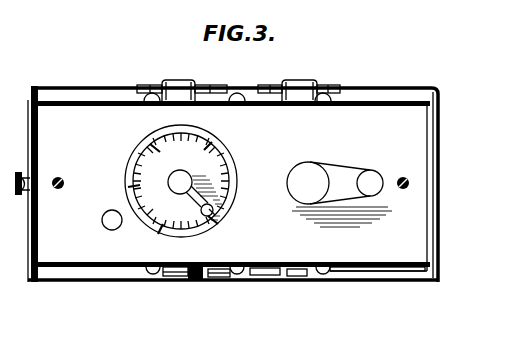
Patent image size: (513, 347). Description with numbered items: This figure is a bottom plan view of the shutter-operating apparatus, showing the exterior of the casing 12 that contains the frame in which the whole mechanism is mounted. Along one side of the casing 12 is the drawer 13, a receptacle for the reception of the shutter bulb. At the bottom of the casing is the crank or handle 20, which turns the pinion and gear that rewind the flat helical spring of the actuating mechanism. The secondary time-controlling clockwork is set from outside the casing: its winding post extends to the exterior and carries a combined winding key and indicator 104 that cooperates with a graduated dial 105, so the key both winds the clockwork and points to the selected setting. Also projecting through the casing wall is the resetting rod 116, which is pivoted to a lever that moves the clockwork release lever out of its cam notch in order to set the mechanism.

The casing 12 is at (420, 133).
The drawer 13 is at (29, 270).
The crank or handle 20 is at (348, 190).
The combined winding key and indicator 104 is at (213, 207).
The dial 105 is at (150, 146).
The resetting rod 116 is at (120, 227).